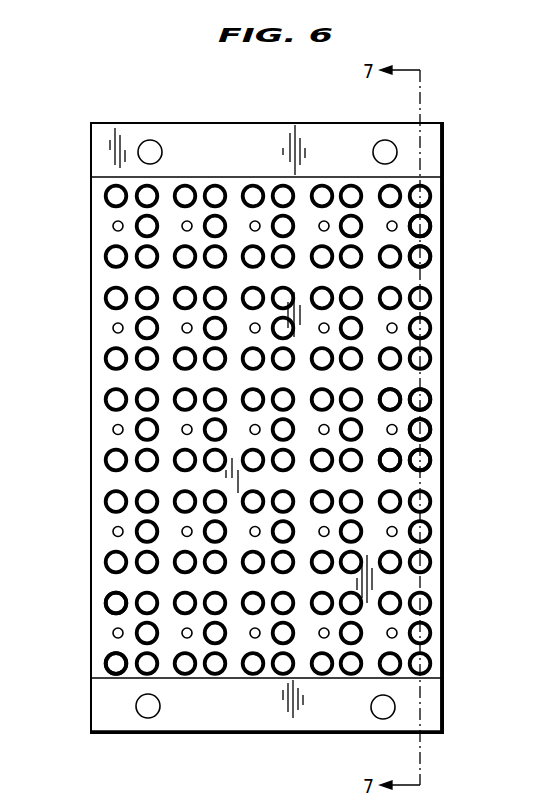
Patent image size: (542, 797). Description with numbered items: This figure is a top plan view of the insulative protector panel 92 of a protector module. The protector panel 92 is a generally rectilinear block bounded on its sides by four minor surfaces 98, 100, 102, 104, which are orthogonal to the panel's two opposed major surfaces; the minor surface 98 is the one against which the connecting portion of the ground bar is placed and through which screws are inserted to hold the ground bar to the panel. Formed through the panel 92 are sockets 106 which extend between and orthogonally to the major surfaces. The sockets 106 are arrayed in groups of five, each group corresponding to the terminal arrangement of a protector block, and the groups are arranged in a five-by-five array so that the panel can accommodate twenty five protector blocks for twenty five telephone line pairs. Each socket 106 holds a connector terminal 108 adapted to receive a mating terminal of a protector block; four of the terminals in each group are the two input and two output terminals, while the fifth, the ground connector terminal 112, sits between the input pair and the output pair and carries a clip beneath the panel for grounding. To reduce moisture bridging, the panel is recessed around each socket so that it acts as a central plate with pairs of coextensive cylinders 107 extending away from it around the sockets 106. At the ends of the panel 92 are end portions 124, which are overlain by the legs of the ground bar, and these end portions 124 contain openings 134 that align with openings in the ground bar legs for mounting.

The protector panel 92 is at (466, 653).
The minor surface 98 is at (91, 388).
The minor surface 100 is at (163, 123).
The minor surface 102 is at (443, 710).
The minor surface 104 is at (253, 735).
The sockets 106 is at (110, 604).
The cylinders 107 is at (432, 256).
The connector terminal 108 is at (387, 392).
The ground connector terminal 112 is at (428, 434).
The end portions 124 is at (103, 151).
The openings 134 is at (160, 152).